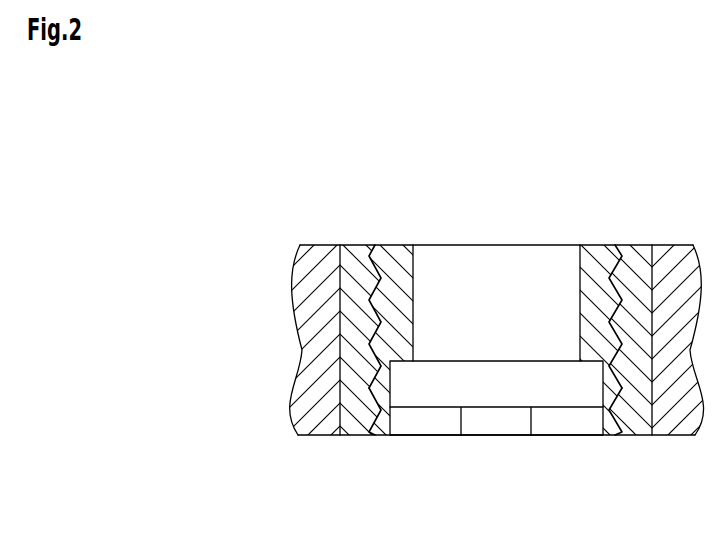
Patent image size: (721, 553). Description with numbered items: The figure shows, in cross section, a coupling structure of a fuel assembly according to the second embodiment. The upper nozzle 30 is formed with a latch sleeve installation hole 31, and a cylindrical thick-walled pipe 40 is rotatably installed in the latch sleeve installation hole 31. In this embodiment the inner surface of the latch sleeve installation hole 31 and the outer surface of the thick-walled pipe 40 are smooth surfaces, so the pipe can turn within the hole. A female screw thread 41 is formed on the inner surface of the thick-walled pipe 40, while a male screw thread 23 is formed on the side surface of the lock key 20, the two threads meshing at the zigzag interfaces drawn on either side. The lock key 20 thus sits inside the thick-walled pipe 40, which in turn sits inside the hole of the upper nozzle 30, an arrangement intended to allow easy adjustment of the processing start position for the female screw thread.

The lock key 20 is at (595, 250).
The male screw thread 23 is at (377, 268).
The upper nozzle 30 is at (315, 432).
The latch sleeve installation hole 31 is at (342, 435).
The thick-walled pipe 40 is at (358, 257).
The female screw thread 41 is at (377, 432).